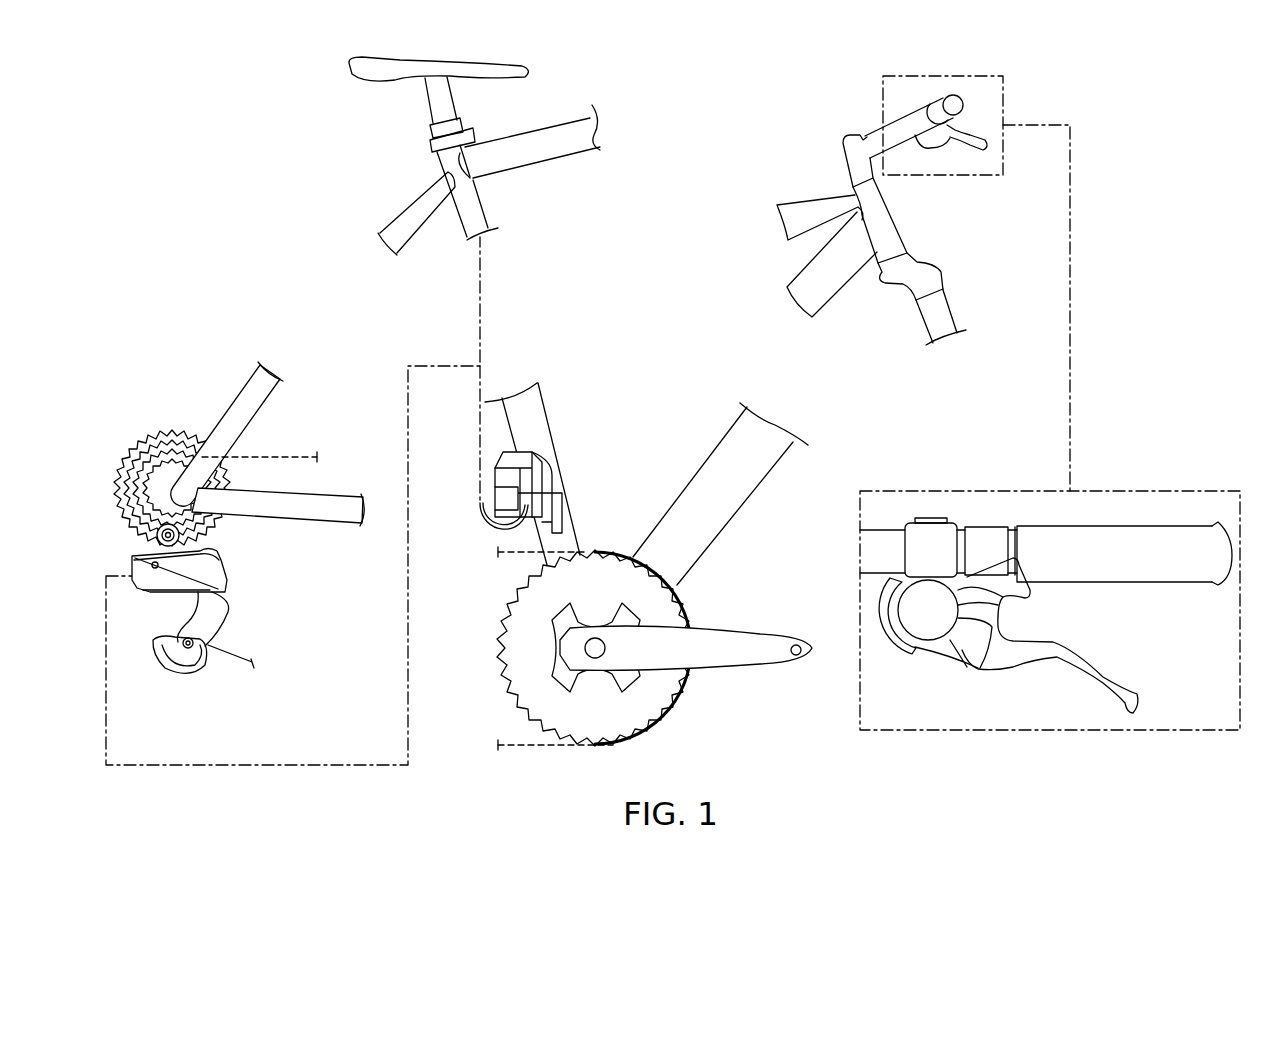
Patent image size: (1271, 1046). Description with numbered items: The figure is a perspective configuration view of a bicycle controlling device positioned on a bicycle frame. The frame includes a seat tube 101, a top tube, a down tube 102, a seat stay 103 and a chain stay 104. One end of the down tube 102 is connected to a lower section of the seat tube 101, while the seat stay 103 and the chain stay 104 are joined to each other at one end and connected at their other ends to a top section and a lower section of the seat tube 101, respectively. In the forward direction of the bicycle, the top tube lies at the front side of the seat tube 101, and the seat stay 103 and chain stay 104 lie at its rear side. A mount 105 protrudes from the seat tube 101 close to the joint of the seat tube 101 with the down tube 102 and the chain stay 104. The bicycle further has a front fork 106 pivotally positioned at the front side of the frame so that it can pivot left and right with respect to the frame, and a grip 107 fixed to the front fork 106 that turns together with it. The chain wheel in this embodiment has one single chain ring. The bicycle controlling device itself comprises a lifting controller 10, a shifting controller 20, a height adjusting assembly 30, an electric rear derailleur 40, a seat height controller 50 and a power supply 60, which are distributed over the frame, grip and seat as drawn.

The lifting controller 10 is at (936, 535).
The shifting controller 20 is at (958, 657).
The height adjusting assembly 30 is at (425, 113).
The electric rear derailleur 40 is at (198, 672).
The seat height controller 50 is at (472, 564).
The power supply 60 is at (485, 530).
The seat tube 101 is at (472, 212).
The down tube 102 is at (707, 518).
The seat stay 103 is at (240, 393).
The chain stay 104 is at (328, 510).
The mount 105 is at (557, 520).
The front fork 106 is at (922, 275).
The grip 107 is at (962, 100).